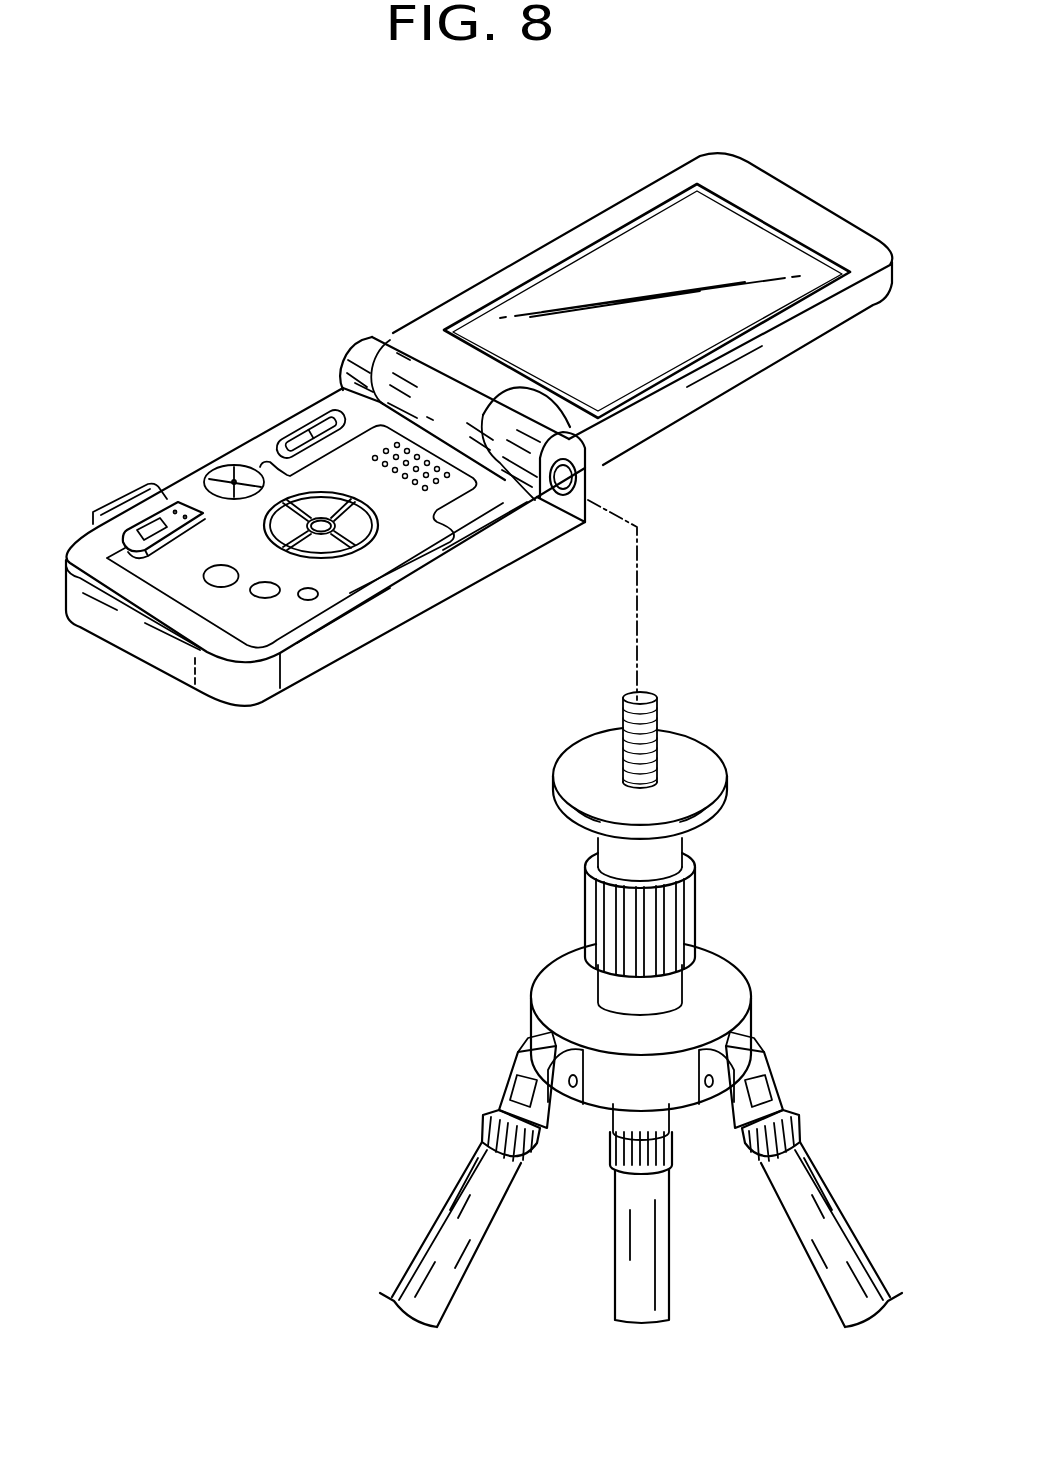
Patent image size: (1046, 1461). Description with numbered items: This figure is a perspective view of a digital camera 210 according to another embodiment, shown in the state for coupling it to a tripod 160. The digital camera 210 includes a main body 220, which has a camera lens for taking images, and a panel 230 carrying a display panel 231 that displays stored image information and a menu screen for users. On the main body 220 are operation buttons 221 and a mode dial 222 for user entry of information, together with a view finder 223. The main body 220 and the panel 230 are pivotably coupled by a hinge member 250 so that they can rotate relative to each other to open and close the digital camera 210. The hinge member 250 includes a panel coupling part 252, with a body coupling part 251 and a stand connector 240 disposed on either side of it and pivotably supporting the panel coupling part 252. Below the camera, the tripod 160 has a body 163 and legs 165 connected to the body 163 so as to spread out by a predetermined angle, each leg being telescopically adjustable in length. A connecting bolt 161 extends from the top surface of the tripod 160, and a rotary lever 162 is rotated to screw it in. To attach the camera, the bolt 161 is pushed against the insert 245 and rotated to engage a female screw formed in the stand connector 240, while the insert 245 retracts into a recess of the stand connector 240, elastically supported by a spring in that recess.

The digital camera 210 is at (348, 193).
The main body 220 is at (258, 466).
The operation buttons 221 is at (380, 545).
The mode dial 222 is at (222, 474).
The view finder 223 is at (148, 530).
The panel 230 is at (445, 318).
The display panel 231 is at (598, 270).
The stand connector 240 is at (595, 450).
The insert 245 is at (558, 488).
The hinge member 250 is at (345, 352).
The body coupling part 251 is at (385, 352).
The panel coupling part 252 is at (600, 415).
The tripod 160 is at (506, 790).
The connecting bolt 161 is at (650, 747).
The rotary lever 162 is at (690, 905).
The body 163 is at (735, 990).
The legs 165 is at (838, 1196).